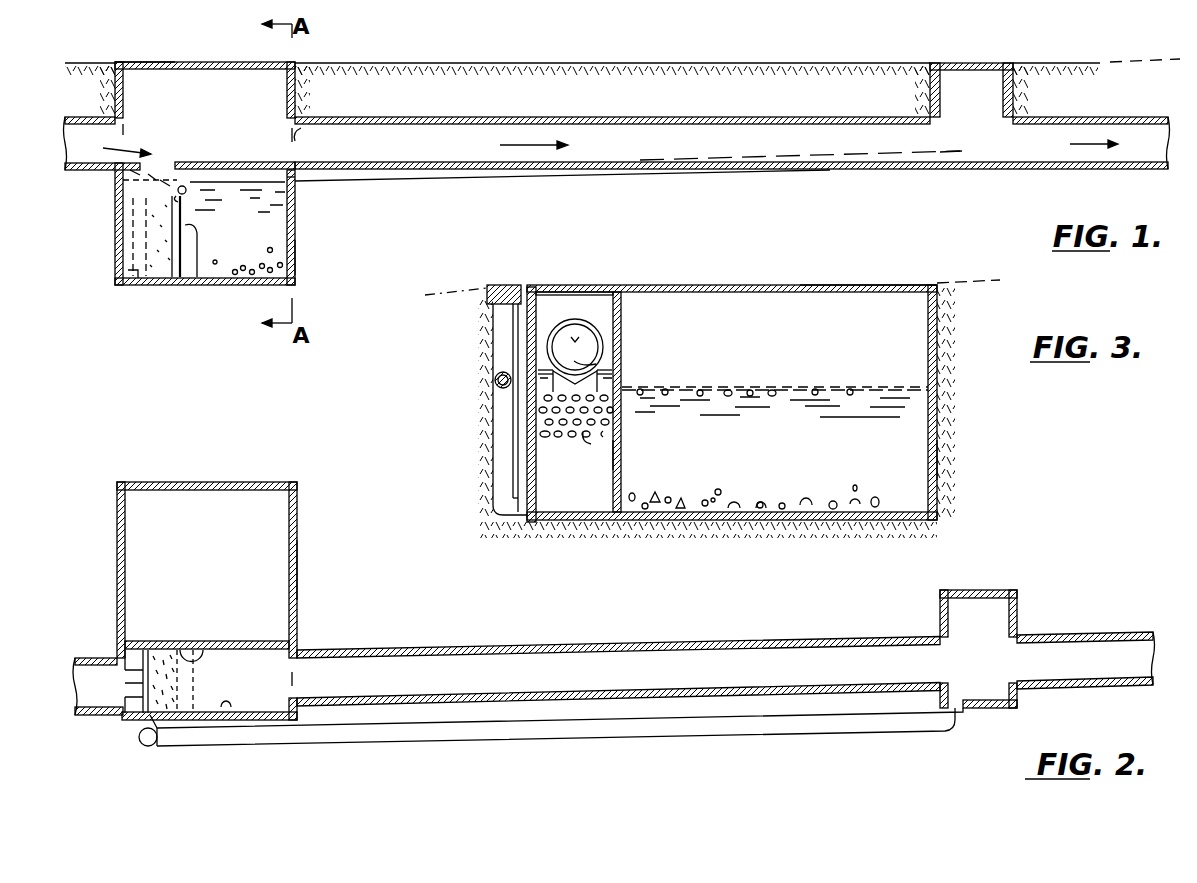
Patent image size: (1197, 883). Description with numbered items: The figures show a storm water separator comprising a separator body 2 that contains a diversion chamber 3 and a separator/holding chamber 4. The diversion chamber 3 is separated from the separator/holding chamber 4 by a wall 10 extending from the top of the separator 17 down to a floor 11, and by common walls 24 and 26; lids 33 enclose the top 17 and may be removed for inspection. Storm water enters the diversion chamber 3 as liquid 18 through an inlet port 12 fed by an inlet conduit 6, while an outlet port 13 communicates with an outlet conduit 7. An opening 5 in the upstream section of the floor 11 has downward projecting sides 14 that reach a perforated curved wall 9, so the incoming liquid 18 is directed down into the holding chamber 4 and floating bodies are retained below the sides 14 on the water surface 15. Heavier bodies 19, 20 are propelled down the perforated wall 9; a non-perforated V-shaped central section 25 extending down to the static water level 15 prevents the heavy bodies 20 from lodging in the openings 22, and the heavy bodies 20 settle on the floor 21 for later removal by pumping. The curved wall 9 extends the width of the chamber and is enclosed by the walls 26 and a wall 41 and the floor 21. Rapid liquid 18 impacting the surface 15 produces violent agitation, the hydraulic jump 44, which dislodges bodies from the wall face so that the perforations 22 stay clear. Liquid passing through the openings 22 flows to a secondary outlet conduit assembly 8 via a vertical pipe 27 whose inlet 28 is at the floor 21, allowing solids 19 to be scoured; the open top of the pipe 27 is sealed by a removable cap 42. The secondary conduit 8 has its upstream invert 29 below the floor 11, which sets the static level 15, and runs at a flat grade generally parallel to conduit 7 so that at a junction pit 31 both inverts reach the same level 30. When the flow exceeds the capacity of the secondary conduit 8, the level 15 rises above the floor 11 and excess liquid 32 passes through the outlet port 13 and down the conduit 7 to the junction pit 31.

In FIG. 1, the separator body 2 is at (305, 243).
In FIG. 3, the separator body 2 is at (950, 424).
In FIG. 2, the separator body 2 is at (308, 508).
In FIG. 1, the diversion chamber 3 is at (241, 106).
In FIG. 3, the diversion chamber 3 is at (547, 307).
In FIG. 3, the separator/holding chamber 4 is at (797, 351).
In FIG. 2, the separator/holding chamber 4 is at (224, 553).
In FIG. 1, the opening 5 is at (123, 128).
In FIG. 3, the opening 5 is at (578, 325).
In FIG. 1, the inlet conduit 6 is at (78, 117).
In FIG. 3, the inlet conduit 6 is at (630, 297).
In FIG. 2, the inlet conduit 6 is at (93, 657).
In FIG. 1, the outlet conduit 7 is at (388, 116).
In FIG. 2, the outlet conduit 7 is at (400, 648).
In FIG. 1, the secondary outlet conduit assembly 8 is at (466, 176).
In FIG. 3, the secondary outlet conduit assembly 8 is at (494, 382).
In FIG. 2, the secondary outlet conduit assembly 8 is at (573, 733).
In FIG. 1, the perforated curved wall 9 is at (200, 283).
In FIG. 3, the perforated curved wall 9 is at (585, 436).
In FIG. 2, the perforated curved wall 9 is at (177, 741).
In FIG. 3, the wall 10 is at (598, 331).
In FIG. 2, the wall 10 is at (250, 640).
In FIG. 1, the floor 11 is at (289, 289).
In FIG. 3, the floor 11 is at (884, 520).
In FIG. 2, the floor 11 is at (209, 709).
In FIG. 1, the inlet port 12 is at (110, 183).
In FIG. 3, the inlet port 12 is at (543, 336).
In FIG. 2, the inlet port 12 is at (97, 718).
In FIG. 1, the outlet port 13 is at (293, 135).
In FIG. 2, the outlet port 13 is at (294, 672).
In FIG. 3, the sides 14 is at (616, 372).
In FIG. 2, the sides 14 is at (160, 672).
In FIG. 1, the water surface 15 is at (243, 180).
In FIG. 3, the water surface 15 is at (870, 386).
In FIG. 1, the top of the separator 17 is at (207, 66).
In FIG. 3, the top of the separator 17 is at (715, 285).
In FIG. 1, the liquid 18 is at (128, 146).
In FIG. 1, the heavier bodies 19 is at (172, 275).
In FIG. 3, the heavier bodies 19 is at (733, 390).
In FIG. 1, the heavy bodies 20 is at (246, 284).
In FIG. 3, the heavy bodies 20 is at (650, 506).
In FIG. 3, the floor 21 is at (760, 512).
In FIG. 2, the floor 21 is at (223, 710).
In FIG. 1, the openings 22 is at (180, 190).
In FIG. 3, the openings 22 is at (550, 428).
In FIG. 2, the openings 22 is at (207, 656).
In FIG. 1, the common wall 24 is at (297, 260).
In FIG. 3, the common wall 24 is at (937, 461).
In FIG. 2, the common wall 24 is at (297, 558).
In FIG. 3, the non-perforated V-shaped central section 25 is at (600, 354).
In FIG. 2, the non-perforated V-shaped central section 25 is at (140, 678).
In FIG. 1, the common walls 26 is at (123, 270).
In FIG. 3, the common walls 26 is at (540, 472).
In FIG. 2, the common walls 26 is at (117, 533).
In FIG. 3, the vertical pipe 27 is at (510, 452).
In FIG. 1, the inlet 28 is at (134, 288).
In FIG. 3, the inlet 28 is at (521, 514).
In FIG. 2, the inlet 28 is at (140, 730).
In FIG. 1, the upstream invert 29 is at (294, 178).
In FIG. 1, the level 30 is at (957, 155).
In FIG. 1, the junction pit 31 is at (963, 83).
In FIG. 2, the junction pit 31 is at (1017, 598).
In FIG. 1, the excess liquid 32 is at (543, 143).
In FIG. 1, the lids 33 is at (164, 62).
In FIG. 3, the lids 33 is at (830, 285).
In FIG. 3, the wall 41 is at (620, 456).
In FIG. 3, the removable cap 42 is at (500, 290).
In FIG. 1, the hydraulic jump 44 is at (189, 183).